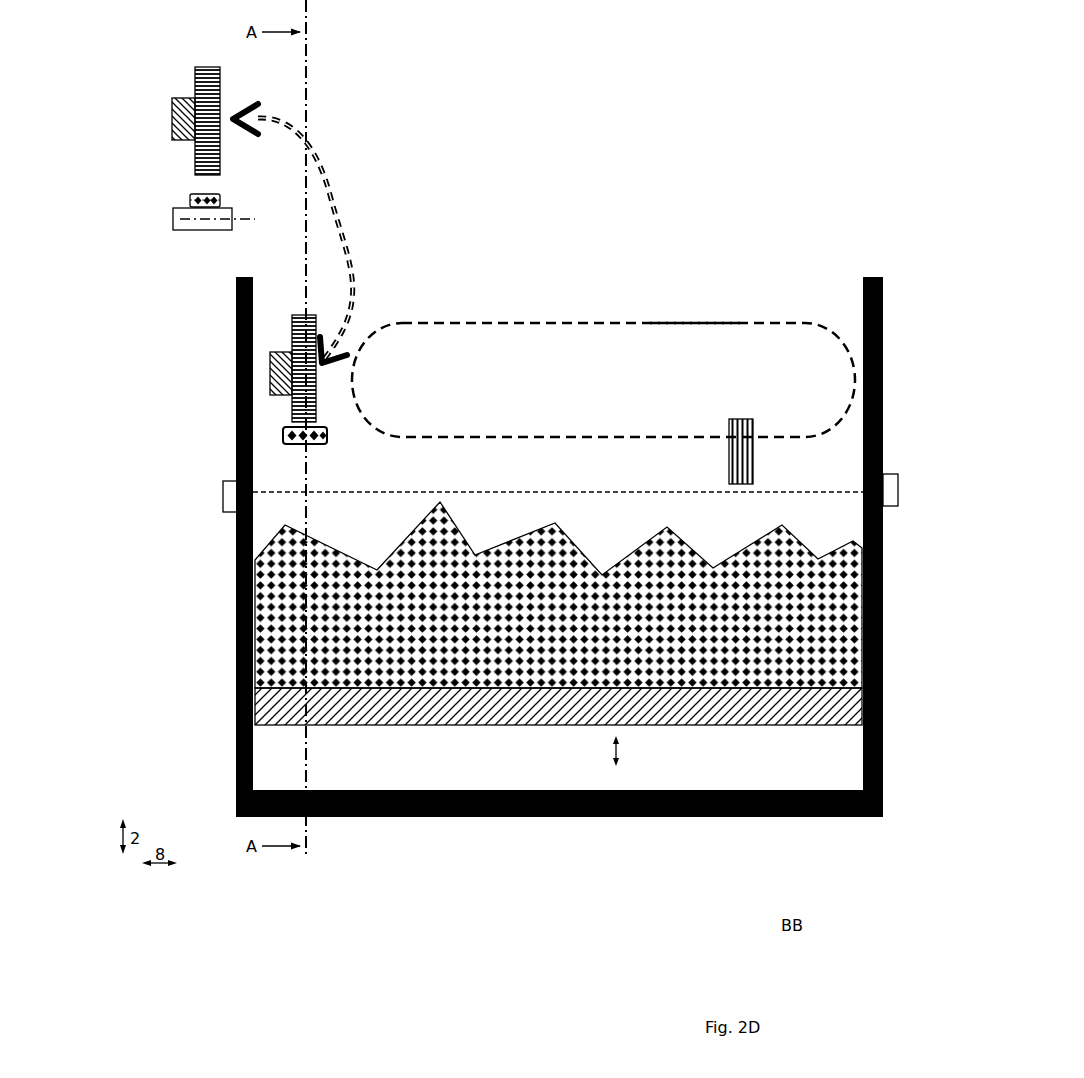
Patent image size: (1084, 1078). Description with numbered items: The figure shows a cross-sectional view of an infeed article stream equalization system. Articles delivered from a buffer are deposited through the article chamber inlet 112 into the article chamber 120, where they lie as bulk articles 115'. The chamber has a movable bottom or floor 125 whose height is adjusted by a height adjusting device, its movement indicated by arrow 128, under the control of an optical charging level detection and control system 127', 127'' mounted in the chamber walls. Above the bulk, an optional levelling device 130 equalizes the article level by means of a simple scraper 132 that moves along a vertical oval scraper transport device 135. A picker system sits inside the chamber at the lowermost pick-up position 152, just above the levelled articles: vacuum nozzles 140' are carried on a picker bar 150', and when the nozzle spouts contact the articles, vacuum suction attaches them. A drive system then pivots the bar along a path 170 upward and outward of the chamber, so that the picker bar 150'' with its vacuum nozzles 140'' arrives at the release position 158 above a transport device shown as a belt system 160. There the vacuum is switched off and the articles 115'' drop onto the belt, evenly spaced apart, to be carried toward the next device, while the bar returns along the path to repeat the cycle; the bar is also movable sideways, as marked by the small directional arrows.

The article chamber inlet 112 is at (559, 506).
The vacuum nozzles 140'' is at (130, 121).
The picker bar 150'' is at (117, 125).
The release position 158 is at (195, 189).
The articles 115'' is at (130, 186).
The belt system 160 is at (172, 219).
The path 170 is at (357, 256).
The vacuum nozzles 140' is at (178, 342).
The picker bar 150' is at (166, 347).
The bulk articles 115' is at (201, 507).
The levelling device 130 is at (561, 323).
The vertical oval scraper transport device 135 is at (695, 312).
The scraper 132 is at (752, 420).
The pick-up position 152 is at (285, 476).
The optical charging level detection and control system 127' is at (194, 497).
The optical charging level detection and control system 127'' is at (924, 490).
The article chamber 120 is at (327, 665).
The movable bottom or floor 125 is at (398, 710).
The arrow indicating movement 128 is at (603, 750).